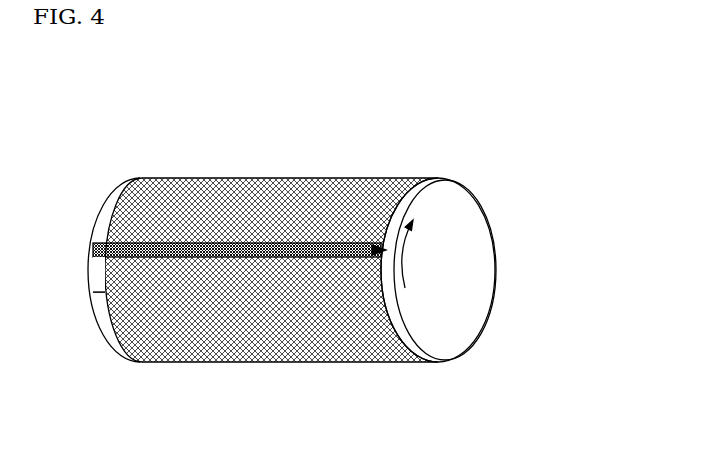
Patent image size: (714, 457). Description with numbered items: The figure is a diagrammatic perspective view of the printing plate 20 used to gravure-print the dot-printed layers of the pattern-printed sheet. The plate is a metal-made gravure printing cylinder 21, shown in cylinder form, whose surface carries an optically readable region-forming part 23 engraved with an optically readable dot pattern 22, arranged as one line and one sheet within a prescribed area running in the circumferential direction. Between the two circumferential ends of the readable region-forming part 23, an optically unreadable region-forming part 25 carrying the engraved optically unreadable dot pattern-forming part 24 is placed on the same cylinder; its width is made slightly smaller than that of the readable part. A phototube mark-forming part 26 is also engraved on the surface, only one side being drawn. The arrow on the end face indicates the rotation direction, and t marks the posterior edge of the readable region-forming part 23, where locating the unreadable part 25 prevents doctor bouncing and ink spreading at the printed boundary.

The printing plate 20 is at (325, 244).
The gravure printing cylinder 21 is at (488, 312).
The engraved optically readable dot pattern 22 is at (268, 203).
The optically readable region-forming part 23 is at (117, 212).
The engraved optically unreadable dot pattern-forming part 24 is at (330, 248).
The optically unreadable region-forming part 25 is at (108, 248).
The phototube mark-forming part 26 is at (381, 256).
The posterior edge of the optically readable region-forming part t is at (201, 245).